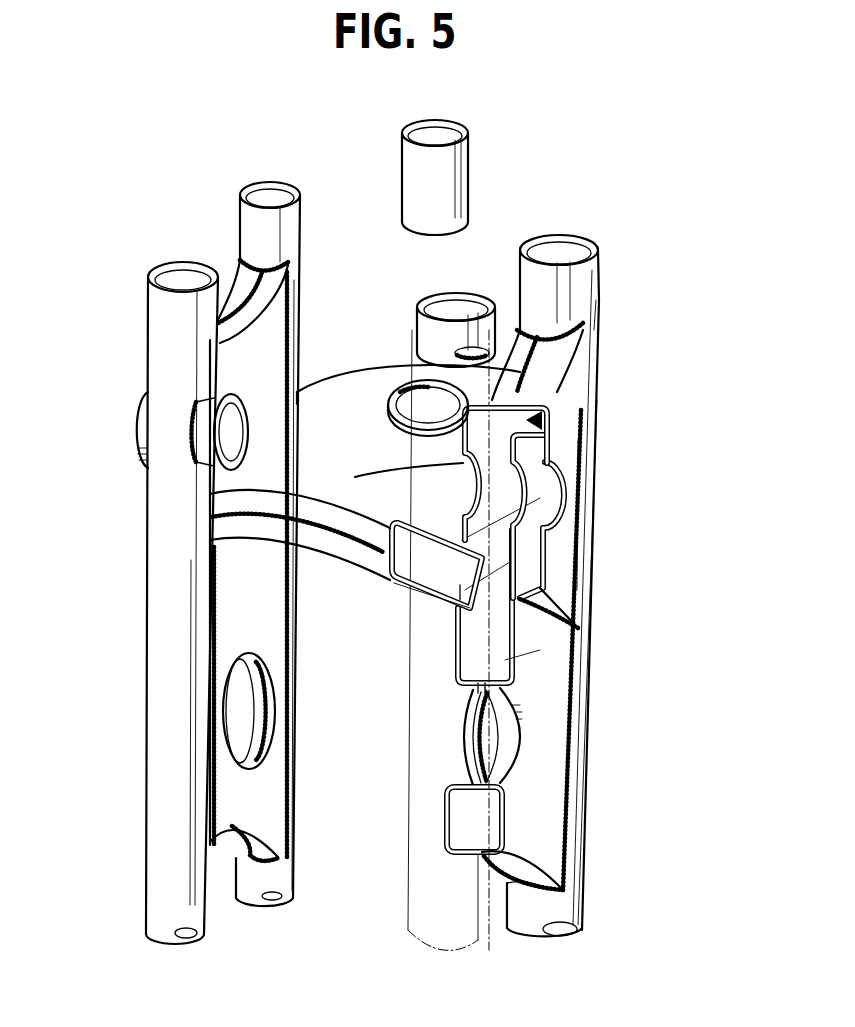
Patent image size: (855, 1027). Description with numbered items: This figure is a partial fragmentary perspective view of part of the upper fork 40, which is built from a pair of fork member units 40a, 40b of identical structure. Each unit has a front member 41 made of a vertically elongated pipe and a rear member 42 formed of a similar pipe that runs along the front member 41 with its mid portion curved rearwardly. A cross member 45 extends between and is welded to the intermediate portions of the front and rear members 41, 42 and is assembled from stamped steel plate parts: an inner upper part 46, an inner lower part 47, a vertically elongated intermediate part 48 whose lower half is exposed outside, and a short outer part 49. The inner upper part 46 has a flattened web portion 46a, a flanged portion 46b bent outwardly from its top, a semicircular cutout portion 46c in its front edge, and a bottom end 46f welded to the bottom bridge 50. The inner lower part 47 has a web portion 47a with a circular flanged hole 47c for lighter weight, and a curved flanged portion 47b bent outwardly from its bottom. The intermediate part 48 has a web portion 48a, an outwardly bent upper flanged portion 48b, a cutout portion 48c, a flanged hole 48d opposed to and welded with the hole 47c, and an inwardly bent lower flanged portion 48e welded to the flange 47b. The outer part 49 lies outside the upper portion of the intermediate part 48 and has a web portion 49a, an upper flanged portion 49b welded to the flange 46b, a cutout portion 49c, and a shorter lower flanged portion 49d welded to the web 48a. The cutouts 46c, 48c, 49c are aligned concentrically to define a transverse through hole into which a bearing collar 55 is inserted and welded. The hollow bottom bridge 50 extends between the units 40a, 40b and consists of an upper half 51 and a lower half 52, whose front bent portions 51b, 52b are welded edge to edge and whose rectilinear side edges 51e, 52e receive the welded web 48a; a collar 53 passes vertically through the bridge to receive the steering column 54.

The upper fork 40 is at (576, 200).
The fork member unit 40a is at (620, 312).
The fork member unit 40b is at (217, 206).
The front member 41 is at (165, 325).
The rear member 42 is at (288, 240).
The cross member 45 is at (562, 560).
The inner upper part 46 is at (262, 352).
The web portion 46a is at (440, 466).
The flanged portion 46b is at (515, 355).
The semicircular cutout portion 46c is at (468, 477).
The bottom end 46f is at (437, 565).
The inner lower part 47 is at (227, 600).
The web portion 47a is at (537, 658).
The curved flanged portion 47b is at (483, 863).
The circular flanged hole 47c is at (475, 720).
The intermediate part 48 is at (230, 840).
The web portion 48a is at (532, 453).
The upper flanged portion 48b is at (545, 418).
The cutout portion 48c is at (548, 497).
The flanged hole 48d is at (517, 737).
The flanged portion 48e is at (537, 873).
The outer part 49 is at (560, 443).
The web portion 49a is at (567, 587).
The upper flanged portion 49b is at (560, 368).
The cutout portion 49c is at (548, 508).
The lower flanged portion 49d is at (597, 617).
The bottom bridge 50 is at (355, 385).
The upper half 51 is at (322, 385).
The front bent portion 51b is at (217, 503).
The side edge 51e is at (440, 588).
The lower half 52 is at (397, 573).
The front bent portion 52b is at (233, 530).
The side edge 52e is at (453, 663).
The collar 53 is at (442, 392).
The steering column 54 is at (412, 165).
The bearing collar 55 is at (140, 435).